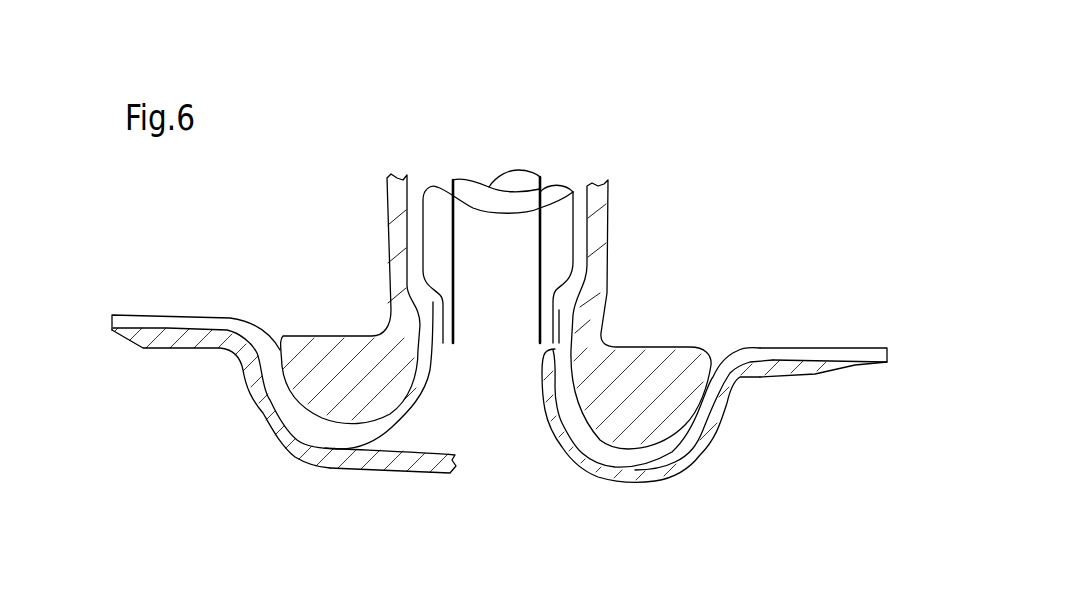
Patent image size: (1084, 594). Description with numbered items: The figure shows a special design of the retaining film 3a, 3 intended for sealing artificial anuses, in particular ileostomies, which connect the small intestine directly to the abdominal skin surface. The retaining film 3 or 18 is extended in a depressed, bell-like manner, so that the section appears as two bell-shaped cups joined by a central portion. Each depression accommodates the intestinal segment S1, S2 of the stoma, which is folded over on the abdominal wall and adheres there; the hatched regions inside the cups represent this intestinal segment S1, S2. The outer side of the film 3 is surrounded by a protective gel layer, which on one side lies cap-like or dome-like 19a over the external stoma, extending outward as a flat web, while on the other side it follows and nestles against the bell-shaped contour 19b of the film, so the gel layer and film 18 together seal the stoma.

The retaining film 3 is at (221, 398).
The flange of housing 3a is at (785, 346).
The retaining film 18 is at (313, 465).
The cap-like or dome-like gel layer portion 19a is at (353, 455).
The bell-shaped contour of the film 19b is at (610, 472).
The intestinal segment S1 is at (350, 299).
The intestinal segment S2 is at (641, 314).